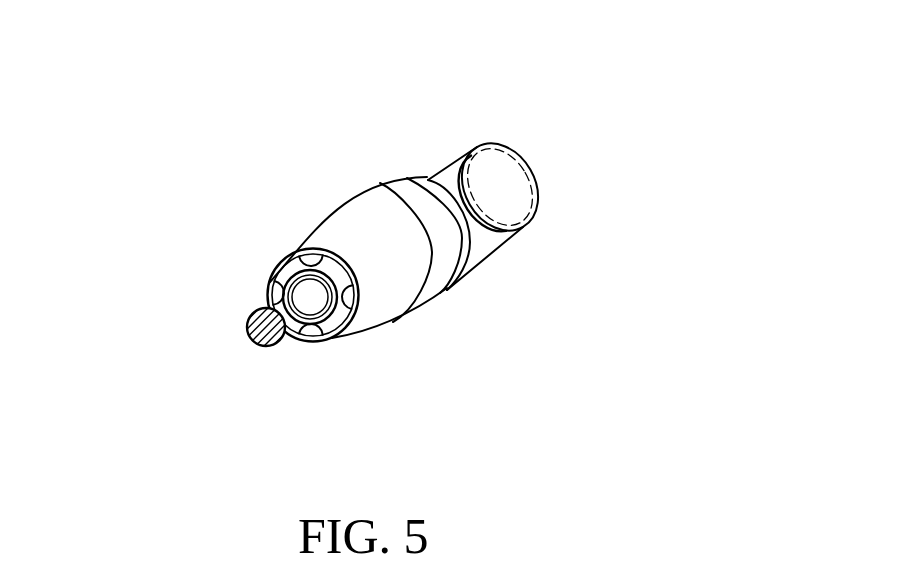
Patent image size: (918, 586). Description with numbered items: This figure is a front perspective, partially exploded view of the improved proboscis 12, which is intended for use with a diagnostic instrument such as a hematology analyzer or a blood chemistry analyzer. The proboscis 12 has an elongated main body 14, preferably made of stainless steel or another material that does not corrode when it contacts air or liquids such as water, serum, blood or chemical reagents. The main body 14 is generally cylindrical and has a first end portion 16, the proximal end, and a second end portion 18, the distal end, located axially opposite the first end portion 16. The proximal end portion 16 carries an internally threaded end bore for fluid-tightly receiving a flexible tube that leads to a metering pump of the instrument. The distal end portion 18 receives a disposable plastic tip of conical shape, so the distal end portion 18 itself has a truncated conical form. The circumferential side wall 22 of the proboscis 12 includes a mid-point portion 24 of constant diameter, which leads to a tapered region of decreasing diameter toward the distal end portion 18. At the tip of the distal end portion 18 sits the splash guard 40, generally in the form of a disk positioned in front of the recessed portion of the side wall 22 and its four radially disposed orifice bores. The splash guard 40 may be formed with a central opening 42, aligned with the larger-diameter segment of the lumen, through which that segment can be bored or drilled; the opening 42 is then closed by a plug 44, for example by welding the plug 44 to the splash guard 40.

The proboscis 12 is at (132, 132).
The main body 14 is at (370, 183).
The first end portion 16 is at (478, 147).
The second end portion 18 is at (313, 228).
The circumferential side wall 22 is at (381, 322).
The mid-point portion 24 is at (435, 287).
The splash guard 40 is at (288, 266).
The central opening 42 is at (313, 307).
The plug 44 is at (265, 346).